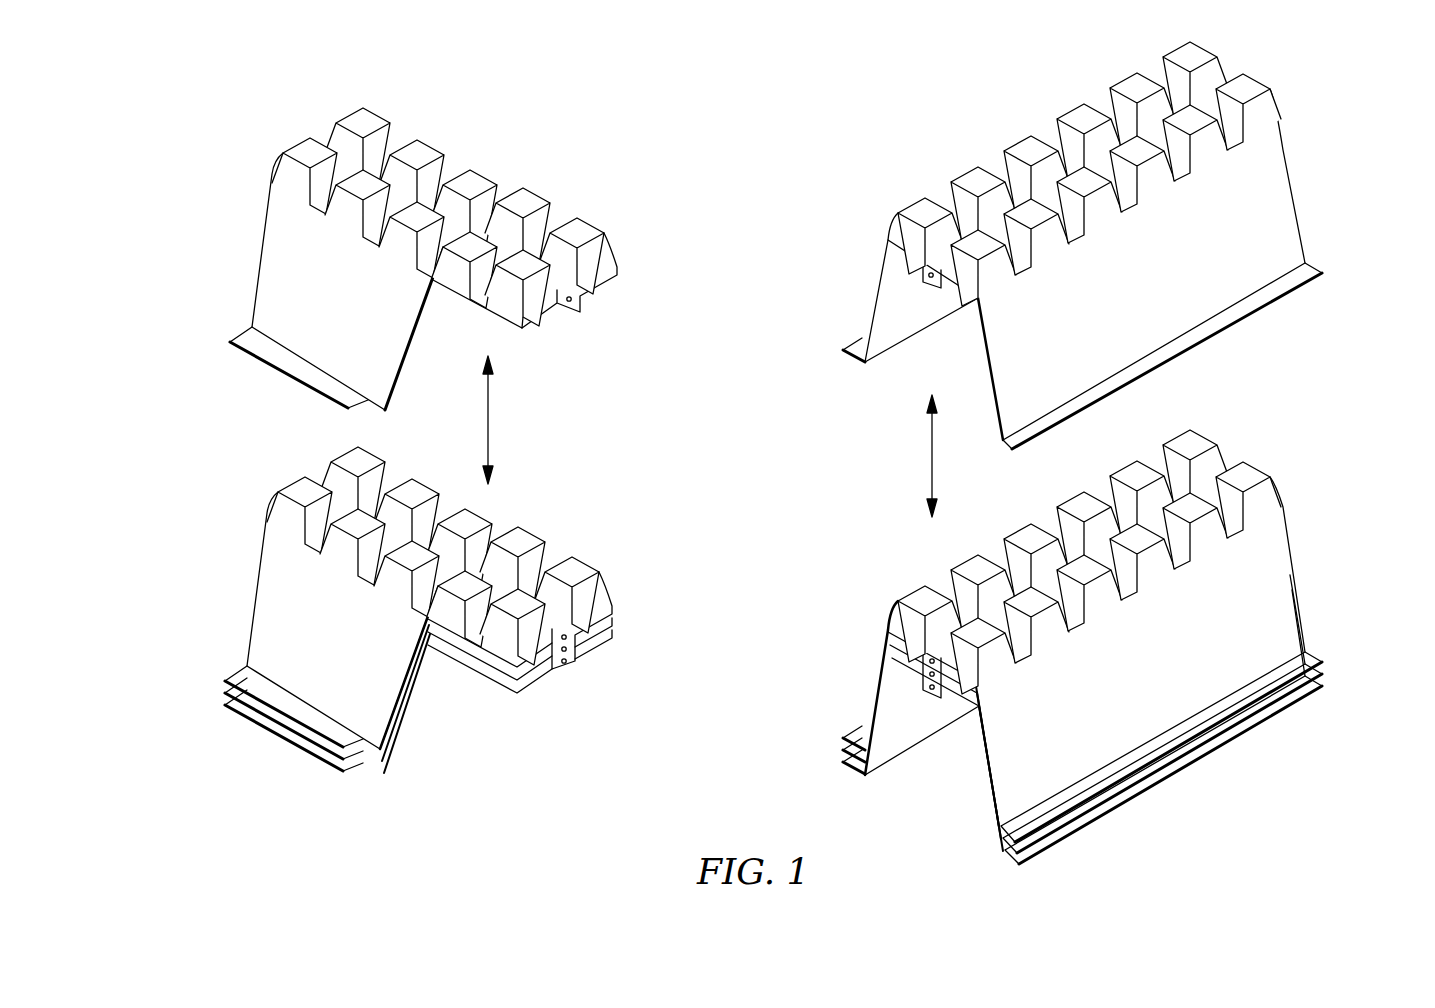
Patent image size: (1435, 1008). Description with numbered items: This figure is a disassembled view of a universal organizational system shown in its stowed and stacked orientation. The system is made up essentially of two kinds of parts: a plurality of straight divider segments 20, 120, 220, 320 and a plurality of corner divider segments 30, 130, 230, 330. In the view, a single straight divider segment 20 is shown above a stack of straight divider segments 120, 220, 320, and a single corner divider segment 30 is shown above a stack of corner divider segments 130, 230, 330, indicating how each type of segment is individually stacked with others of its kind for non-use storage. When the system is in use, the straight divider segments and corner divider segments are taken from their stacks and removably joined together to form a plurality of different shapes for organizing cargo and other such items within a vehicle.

The straight divider segment 20 is at (972, 116).
The corner divider segment 30 is at (278, 116).
The straight divider segment 120 is at (1292, 563).
The straight divider segment 220 is at (1303, 706).
The straight divider segment 320 is at (1222, 750).
The corner divider segment 130 is at (258, 573).
The corner divider segment 230 is at (228, 691).
The corner divider segment 330 is at (266, 731).